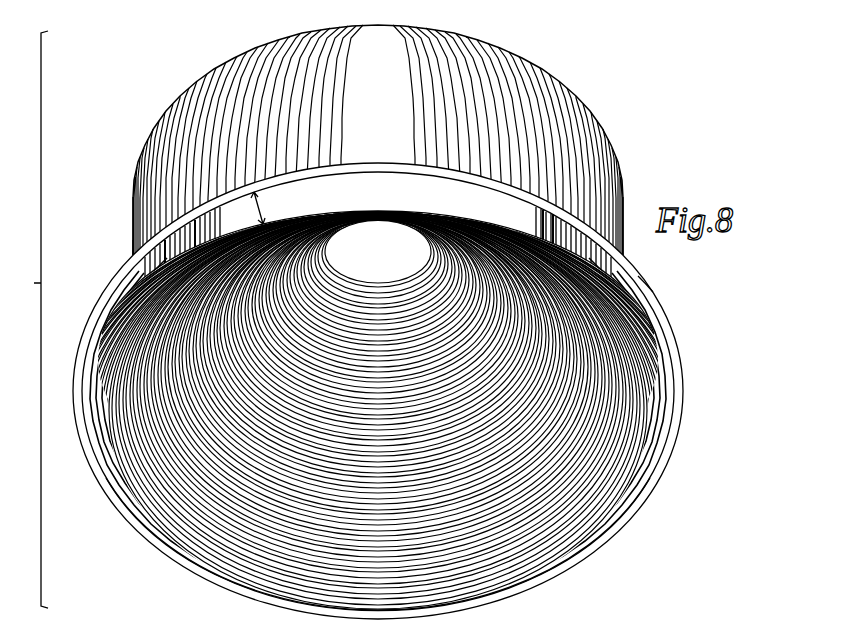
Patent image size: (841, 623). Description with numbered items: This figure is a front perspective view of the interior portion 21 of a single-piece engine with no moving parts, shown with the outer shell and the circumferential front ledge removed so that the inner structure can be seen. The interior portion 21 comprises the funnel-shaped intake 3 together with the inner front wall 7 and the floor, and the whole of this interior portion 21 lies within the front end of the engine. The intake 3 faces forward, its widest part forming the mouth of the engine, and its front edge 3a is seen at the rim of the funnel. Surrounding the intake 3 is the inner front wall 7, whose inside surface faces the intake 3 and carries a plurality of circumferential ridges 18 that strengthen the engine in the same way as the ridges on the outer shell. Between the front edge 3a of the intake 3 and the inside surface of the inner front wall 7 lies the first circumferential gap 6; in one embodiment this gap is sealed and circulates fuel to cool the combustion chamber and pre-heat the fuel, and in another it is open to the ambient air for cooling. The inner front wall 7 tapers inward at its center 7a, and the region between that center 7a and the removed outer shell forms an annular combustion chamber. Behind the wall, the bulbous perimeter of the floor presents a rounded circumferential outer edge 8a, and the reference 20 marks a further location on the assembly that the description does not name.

The interior portion 21 is at (30, 319).
The rounded circumferential outer edge 8a is at (560, 88).
The center of the inner front wall 7a is at (127, 228).
The funnel-shaped intake 3 is at (180, 490).
The inner front wall 7 is at (667, 324).
The first circumferential gap 6 is at (243, 184).
The junction 20 is at (127, 232).
The circumferential ridges 18 is at (637, 277).
The front edge of the intake 3a is at (527, 573).